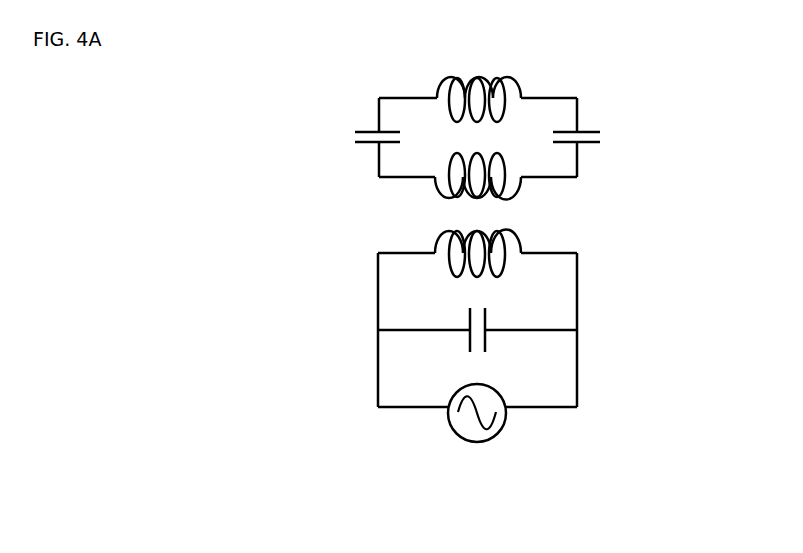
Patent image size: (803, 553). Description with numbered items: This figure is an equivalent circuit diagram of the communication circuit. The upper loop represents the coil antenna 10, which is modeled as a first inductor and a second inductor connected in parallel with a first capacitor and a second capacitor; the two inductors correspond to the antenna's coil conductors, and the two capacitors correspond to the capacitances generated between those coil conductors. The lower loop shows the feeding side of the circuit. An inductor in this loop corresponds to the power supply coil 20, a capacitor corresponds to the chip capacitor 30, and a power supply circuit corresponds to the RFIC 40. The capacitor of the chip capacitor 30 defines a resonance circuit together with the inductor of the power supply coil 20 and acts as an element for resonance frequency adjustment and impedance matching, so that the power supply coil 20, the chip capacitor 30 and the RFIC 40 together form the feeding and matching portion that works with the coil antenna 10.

The coil antenna 10 is at (648, 73).
The power supply coil 20 is at (499, 255).
The chip capacitor 30 is at (513, 332).
The RFIC 40 is at (500, 430).